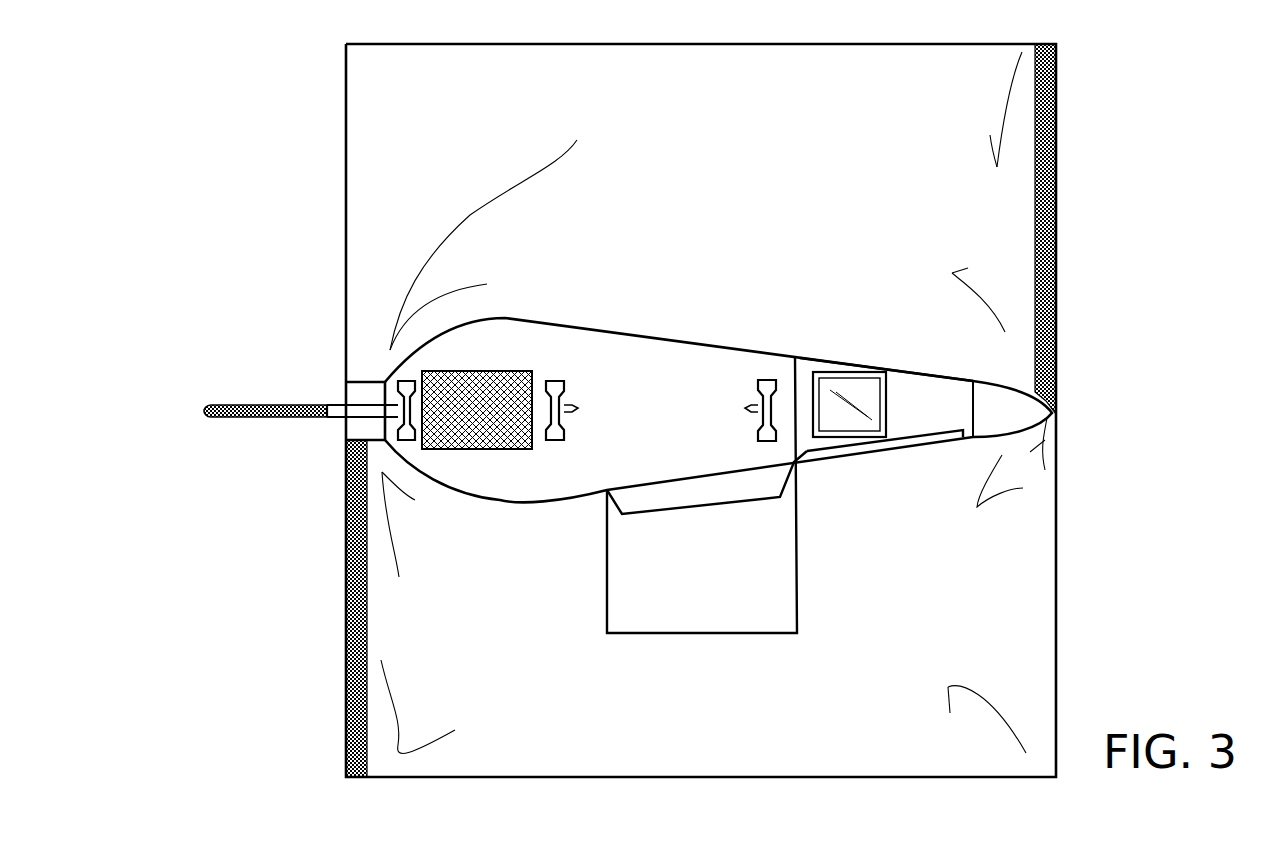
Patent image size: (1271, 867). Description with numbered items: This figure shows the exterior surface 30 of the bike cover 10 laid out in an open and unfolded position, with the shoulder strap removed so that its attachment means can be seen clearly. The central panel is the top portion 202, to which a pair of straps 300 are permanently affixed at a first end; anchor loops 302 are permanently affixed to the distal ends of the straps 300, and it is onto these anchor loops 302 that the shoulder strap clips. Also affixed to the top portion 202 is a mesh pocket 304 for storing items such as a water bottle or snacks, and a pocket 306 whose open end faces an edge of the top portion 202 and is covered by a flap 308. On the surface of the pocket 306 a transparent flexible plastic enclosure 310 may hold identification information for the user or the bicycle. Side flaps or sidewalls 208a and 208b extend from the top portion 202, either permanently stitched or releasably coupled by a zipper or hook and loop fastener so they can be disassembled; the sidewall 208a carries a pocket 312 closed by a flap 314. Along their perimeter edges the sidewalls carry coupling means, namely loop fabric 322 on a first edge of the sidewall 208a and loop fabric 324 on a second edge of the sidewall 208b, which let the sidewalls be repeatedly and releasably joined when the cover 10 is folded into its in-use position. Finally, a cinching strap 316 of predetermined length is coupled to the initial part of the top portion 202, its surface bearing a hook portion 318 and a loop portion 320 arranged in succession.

The cover 10 is at (272, 84).
The exterior surface 30 is at (1146, 135).
The top portion 202 is at (683, 472).
The side flap (sidewall) 208a is at (785, 703).
The side flap (sidewall) 208b is at (785, 168).
The straps 300 is at (562, 398).
The anchor loops 302 is at (578, 408).
The mesh pocket 304 is at (458, 371).
The pocket 306 is at (938, 383).
The flap 308 is at (878, 455).
The transparent flexible plastic enclosure 310 is at (850, 385).
The pocket 312 is at (790, 566).
The flap 314 is at (640, 505).
The cinching strap 316 is at (383, 397).
The hook portion 318 is at (228, 419).
The loop portion 320 is at (290, 419).
The loop fabric 322 is at (345, 601).
The loop fabric 324 is at (1058, 283).